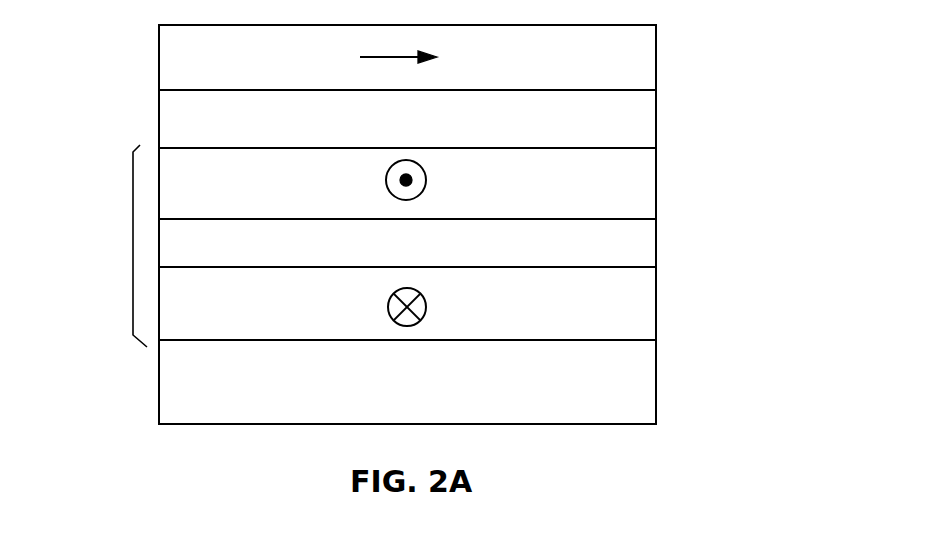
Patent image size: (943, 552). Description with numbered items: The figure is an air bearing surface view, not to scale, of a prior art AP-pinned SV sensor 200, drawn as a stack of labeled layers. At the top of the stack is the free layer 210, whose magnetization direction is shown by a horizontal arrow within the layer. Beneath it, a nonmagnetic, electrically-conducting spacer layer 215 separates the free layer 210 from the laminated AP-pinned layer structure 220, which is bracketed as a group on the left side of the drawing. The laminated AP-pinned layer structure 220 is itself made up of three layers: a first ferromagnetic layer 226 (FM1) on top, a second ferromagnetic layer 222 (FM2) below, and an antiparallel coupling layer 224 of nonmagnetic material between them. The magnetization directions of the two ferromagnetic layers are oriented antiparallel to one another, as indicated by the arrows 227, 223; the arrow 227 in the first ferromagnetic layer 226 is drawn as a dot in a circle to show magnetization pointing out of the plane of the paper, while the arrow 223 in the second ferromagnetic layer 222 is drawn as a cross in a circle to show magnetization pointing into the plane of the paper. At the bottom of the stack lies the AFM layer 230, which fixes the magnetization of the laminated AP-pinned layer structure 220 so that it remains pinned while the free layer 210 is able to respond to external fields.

The AP-pinned SV sensor 200 is at (733, 463).
The free layer 210 is at (642, 68).
The spacer layer 215 is at (642, 125).
The laminated AP-pinned layer structure 220 is at (113, 246).
The second ferromagnetic layer 222 is at (638, 307).
The arrow 223 is at (426, 307).
The antiparallel coupling layer 224 is at (638, 250).
The first ferromagnetic layer 226 is at (642, 183).
The arrow 227 is at (426, 180).
The AFM layer 230 is at (640, 380).